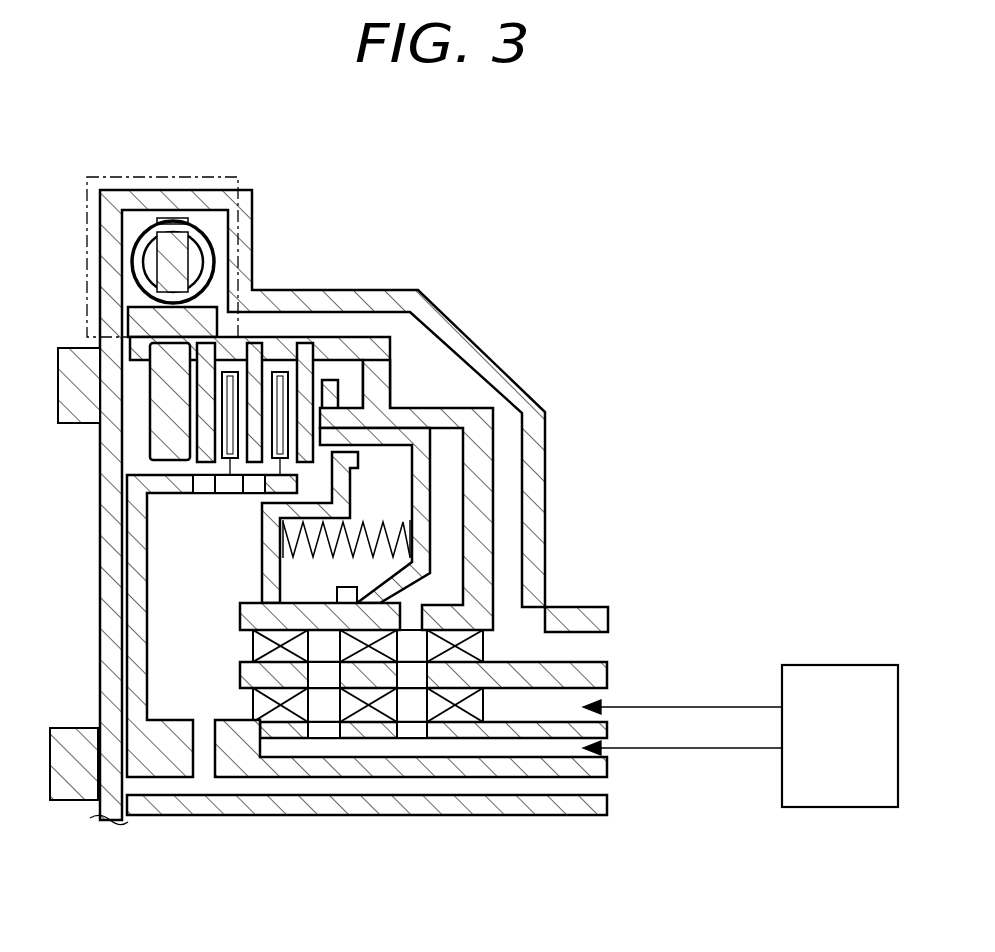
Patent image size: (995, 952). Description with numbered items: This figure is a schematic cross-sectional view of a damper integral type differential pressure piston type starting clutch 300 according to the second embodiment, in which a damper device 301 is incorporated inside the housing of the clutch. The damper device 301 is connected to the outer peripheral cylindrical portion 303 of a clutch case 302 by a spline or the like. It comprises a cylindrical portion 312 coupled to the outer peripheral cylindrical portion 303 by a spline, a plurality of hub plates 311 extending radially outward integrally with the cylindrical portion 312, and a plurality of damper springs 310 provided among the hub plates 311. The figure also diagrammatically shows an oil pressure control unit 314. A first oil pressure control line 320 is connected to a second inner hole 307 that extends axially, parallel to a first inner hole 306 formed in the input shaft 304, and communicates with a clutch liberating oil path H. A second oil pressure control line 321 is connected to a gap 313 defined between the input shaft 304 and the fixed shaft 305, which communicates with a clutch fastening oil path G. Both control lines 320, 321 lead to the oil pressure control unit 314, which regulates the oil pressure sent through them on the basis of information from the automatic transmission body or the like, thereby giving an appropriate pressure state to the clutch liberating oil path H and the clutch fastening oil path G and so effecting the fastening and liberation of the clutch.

The damper integral type differential pressure piston type starting clutch 300 is at (487, 290).
The damper device 301 is at (173, 177).
The clutch case 302 is at (470, 417).
The outer peripheral cylindrical portion 303 is at (370, 348).
The input shaft 304 is at (608, 730).
The fixed shaft 305 is at (608, 677).
The first inner hole 306 is at (608, 787).
The second inner hole 307 is at (408, 747).
The damper springs 310 is at (257, 197).
The hub plates 311 is at (155, 260).
The cylindrical portion 312 is at (212, 325).
The gap 313 is at (528, 693).
The oil pressure control unit 314 is at (833, 787).
The first oil pressure control line 320 is at (733, 750).
The second oil pressure control line 321 is at (723, 705).
The clutch fastening oil path G is at (447, 558).
The clutch liberating oil path H is at (308, 568).